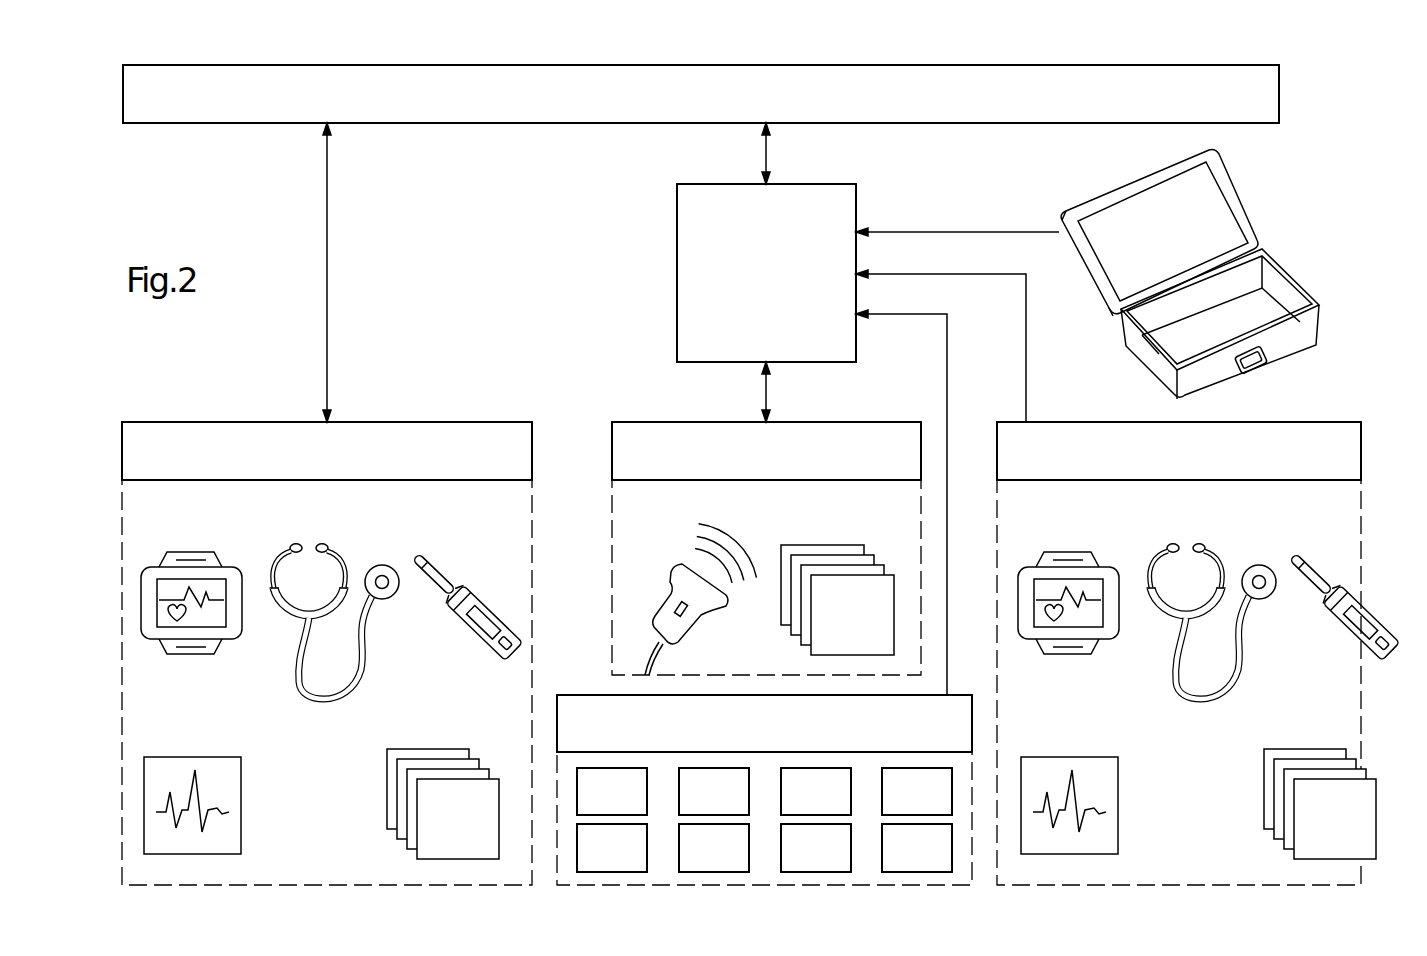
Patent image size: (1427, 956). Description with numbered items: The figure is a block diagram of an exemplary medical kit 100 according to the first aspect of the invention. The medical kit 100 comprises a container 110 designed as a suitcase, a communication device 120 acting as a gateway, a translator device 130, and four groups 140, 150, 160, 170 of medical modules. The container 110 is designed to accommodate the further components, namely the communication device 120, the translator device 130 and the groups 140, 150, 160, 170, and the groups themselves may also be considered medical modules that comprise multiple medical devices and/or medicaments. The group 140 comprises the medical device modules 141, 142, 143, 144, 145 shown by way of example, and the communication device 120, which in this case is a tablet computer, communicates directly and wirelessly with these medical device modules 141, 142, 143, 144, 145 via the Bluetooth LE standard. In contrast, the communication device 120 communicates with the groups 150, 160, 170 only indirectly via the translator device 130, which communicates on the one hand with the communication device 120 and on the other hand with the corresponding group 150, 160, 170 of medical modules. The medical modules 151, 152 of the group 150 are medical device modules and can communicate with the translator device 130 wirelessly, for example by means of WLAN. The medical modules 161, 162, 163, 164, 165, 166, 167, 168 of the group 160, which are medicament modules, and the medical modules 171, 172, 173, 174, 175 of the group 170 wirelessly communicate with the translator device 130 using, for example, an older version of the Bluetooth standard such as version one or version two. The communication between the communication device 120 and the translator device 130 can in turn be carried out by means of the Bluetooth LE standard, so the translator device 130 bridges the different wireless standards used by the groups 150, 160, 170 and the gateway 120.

The medical kit 100 is at (1360, 122).
The container 110 is at (1298, 278).
The communication device 120 is at (790, 103).
The translator device 130 is at (790, 285).
The group of medical modules 140 is at (350, 463).
The medical device module 141 is at (196, 548).
The medical device module 142 is at (343, 550).
The medical device module 143 is at (459, 580).
The medical device module 144 is at (198, 755).
The medical device module 145 is at (433, 747).
The group of medical modules 150 is at (790, 463).
The medical module 151 is at (674, 567).
The medical module 152 is at (830, 543).
The group of medical modules 160 is at (788, 736).
The medical module 161 is at (633, 801).
The medical module 162 is at (735, 801).
The medical module 163 is at (837, 801).
The medical module 164 is at (938, 801).
The medical module 165 is at (633, 858).
The medical module 166 is at (735, 858).
The medical module 167 is at (837, 858).
The medical module 168 is at (938, 858).
The group of medical modules 170 is at (1202, 463).
The medical module 171 is at (1073, 548).
The medical module 172 is at (1220, 550).
The medical module 173 is at (1336, 580).
The medical module 174 is at (1075, 755).
The medical module 175 is at (1310, 747).